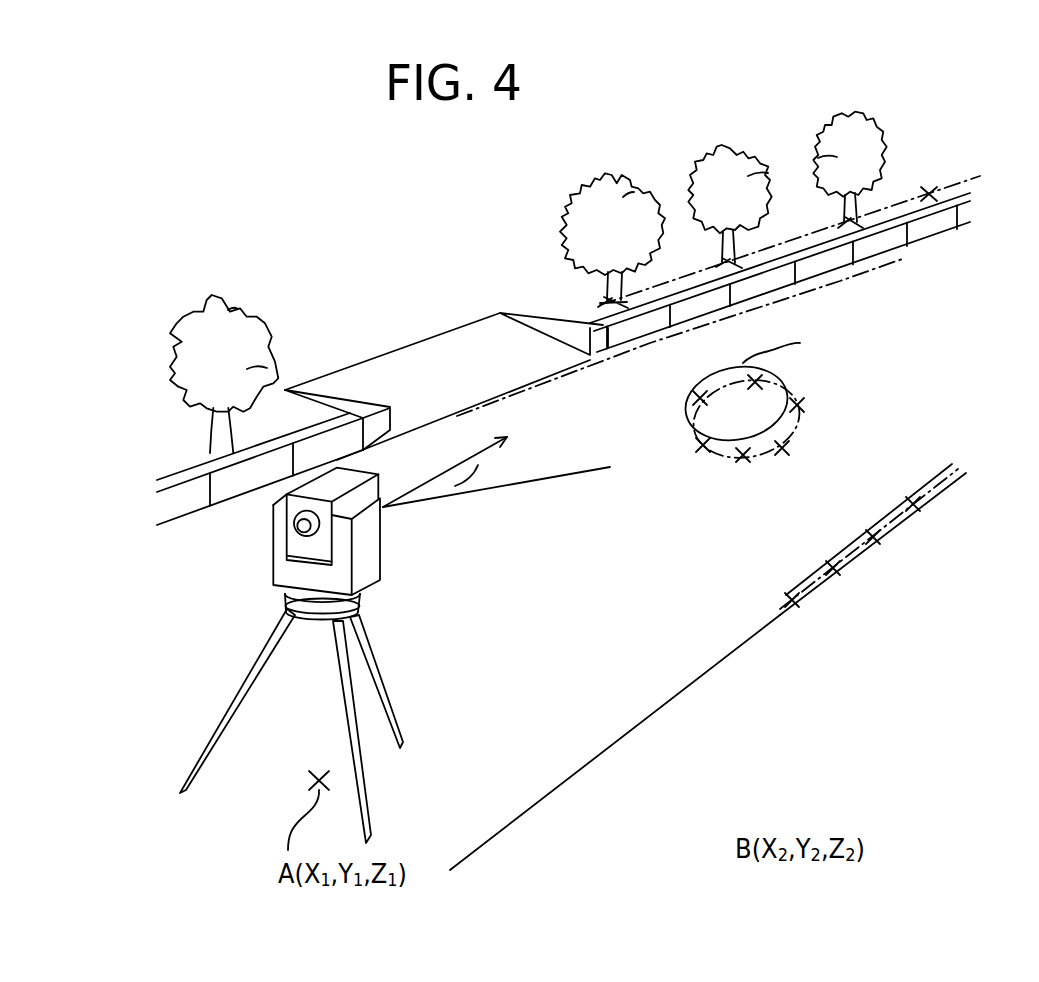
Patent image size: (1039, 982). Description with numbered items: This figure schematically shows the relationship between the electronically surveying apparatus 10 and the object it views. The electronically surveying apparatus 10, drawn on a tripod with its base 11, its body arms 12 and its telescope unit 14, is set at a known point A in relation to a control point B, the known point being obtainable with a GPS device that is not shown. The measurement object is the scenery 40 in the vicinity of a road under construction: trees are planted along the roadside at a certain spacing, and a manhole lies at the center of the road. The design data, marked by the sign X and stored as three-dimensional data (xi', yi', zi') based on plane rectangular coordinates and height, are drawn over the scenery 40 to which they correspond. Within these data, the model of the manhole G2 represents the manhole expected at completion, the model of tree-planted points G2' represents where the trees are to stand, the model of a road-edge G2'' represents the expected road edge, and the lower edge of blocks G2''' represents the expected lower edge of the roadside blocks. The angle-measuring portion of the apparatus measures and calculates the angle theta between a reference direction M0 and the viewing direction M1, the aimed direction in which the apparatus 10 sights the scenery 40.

The electronically surveying apparatus 10 is at (260, 587).
The base / leveling rings 11 is at (357, 598).
The support arms of instrument body 12 is at (270, 547).
The telescope unit 14 is at (332, 480).
The scenery (measurement object) 40 is at (788, 160).
The reference direction M0 is at (570, 477).
The viewing direction M1 is at (433, 503).
The model of the manhole G2 is at (786, 433).
The model of tree-planted points G2' is at (790, 205).
The model of a road-edge G2'' is at (881, 500).
The lower edge of blocks G2''' is at (681, 347).